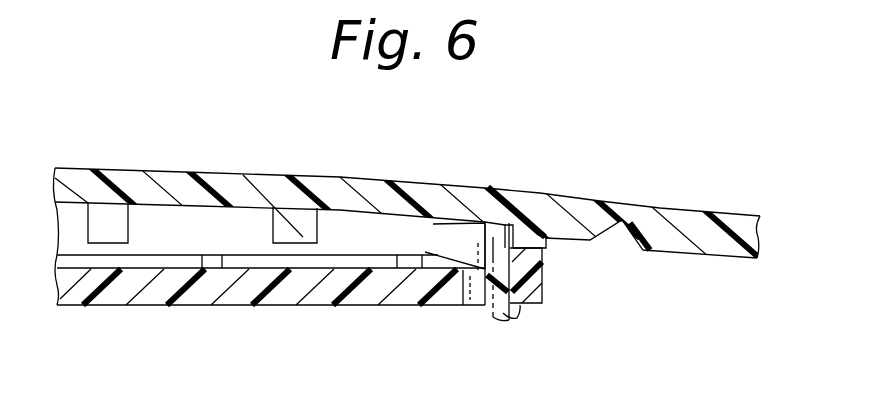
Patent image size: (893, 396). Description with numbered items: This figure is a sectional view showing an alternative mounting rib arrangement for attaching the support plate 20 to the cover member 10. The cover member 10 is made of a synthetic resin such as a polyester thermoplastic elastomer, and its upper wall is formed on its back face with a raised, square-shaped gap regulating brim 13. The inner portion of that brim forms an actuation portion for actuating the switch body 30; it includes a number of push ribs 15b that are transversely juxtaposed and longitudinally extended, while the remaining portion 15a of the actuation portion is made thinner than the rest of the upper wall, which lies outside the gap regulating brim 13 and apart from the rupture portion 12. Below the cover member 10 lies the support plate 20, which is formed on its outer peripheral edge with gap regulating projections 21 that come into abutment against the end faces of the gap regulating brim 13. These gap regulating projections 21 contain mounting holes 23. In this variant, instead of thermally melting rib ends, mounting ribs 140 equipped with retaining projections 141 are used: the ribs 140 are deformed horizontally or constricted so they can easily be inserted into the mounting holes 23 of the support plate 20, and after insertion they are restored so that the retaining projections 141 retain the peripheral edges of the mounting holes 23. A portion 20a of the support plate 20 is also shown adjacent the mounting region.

The cover member 10 is at (213, 168).
The rupture portion 12 is at (622, 220).
The gap regulating brim 13 is at (535, 240).
The remaining portion of the actuation portion 15a is at (257, 172).
The push ribs 15b is at (108, 218).
The support plate 20 is at (322, 297).
The raised portion of lower board 20a is at (438, 257).
The gap regulating projections 21 is at (538, 255).
The mounting holes 23 is at (473, 306).
The switch body 30 is at (160, 257).
The mounting ribs 140 is at (493, 240).
The retaining projections 141 is at (512, 323).